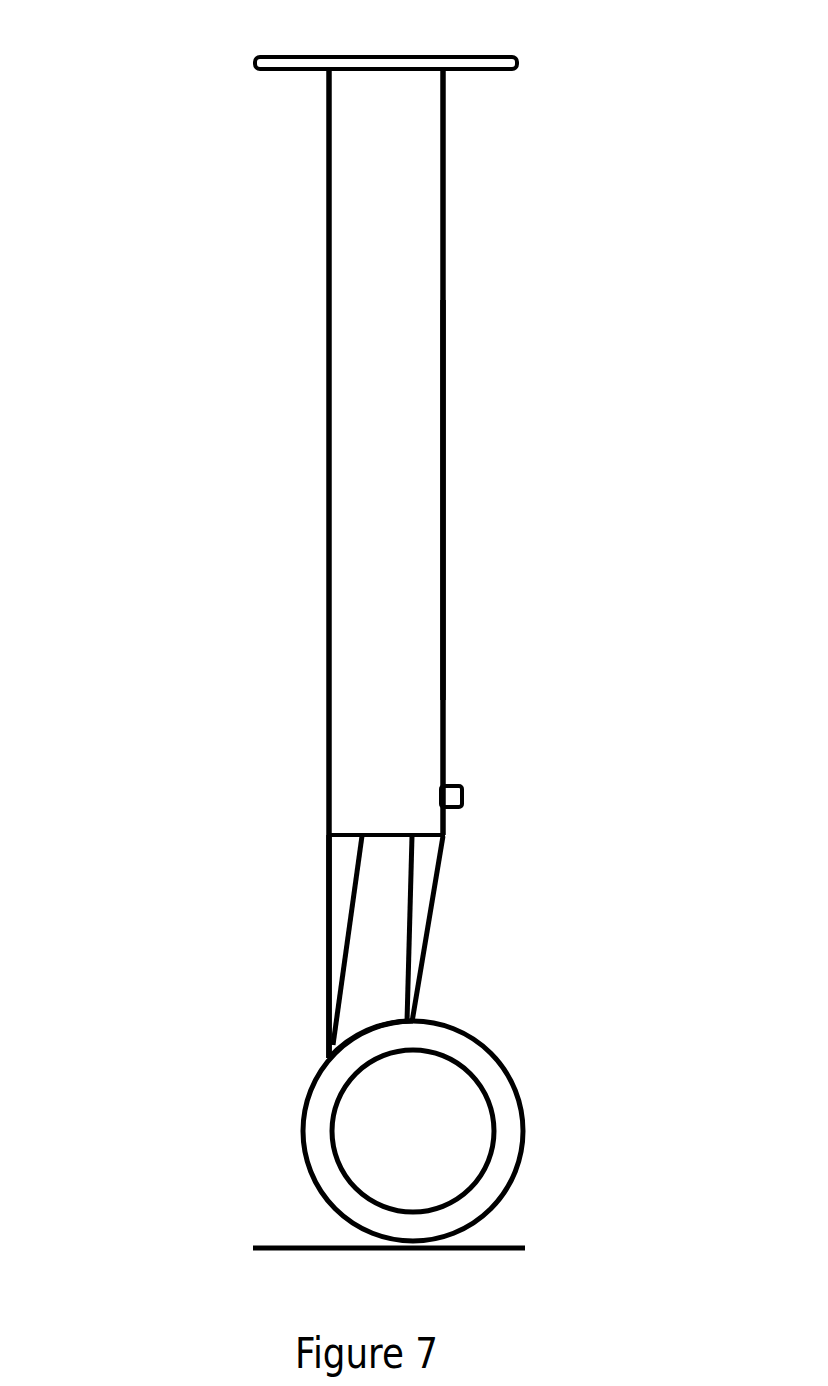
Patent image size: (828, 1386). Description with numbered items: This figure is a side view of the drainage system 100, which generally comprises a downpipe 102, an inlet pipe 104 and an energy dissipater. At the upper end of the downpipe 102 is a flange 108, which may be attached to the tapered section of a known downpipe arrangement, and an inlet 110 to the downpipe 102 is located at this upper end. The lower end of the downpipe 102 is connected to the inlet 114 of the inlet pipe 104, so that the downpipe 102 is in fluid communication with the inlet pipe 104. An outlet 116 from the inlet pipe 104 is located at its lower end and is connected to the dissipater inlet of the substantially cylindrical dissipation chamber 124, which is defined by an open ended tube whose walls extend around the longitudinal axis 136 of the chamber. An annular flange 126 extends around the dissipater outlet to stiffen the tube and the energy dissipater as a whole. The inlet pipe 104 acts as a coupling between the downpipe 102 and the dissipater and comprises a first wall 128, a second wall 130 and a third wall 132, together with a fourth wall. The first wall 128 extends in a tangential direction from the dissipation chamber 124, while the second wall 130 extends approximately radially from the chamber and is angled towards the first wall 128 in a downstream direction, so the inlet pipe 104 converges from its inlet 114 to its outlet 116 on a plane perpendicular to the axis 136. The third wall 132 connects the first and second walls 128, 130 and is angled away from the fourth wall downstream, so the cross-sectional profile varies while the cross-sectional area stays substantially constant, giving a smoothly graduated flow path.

The drainage system 100 is at (236, 116).
The inlet 110 is at (370, 55).
The flange 108 is at (497, 68).
The downpipe 102 is at (445, 510).
The inlet 114 is at (385, 832).
The inlet pipe 104 is at (328, 858).
The first wall 128 is at (342, 890).
The third wall 132 is at (380, 953).
The second wall 130 is at (422, 893).
The outlet 116 is at (368, 1040).
The annular flange 126 is at (505, 1067).
The dissipation chamber 124 is at (480, 1147).
The axis 136 is at (415, 1142).